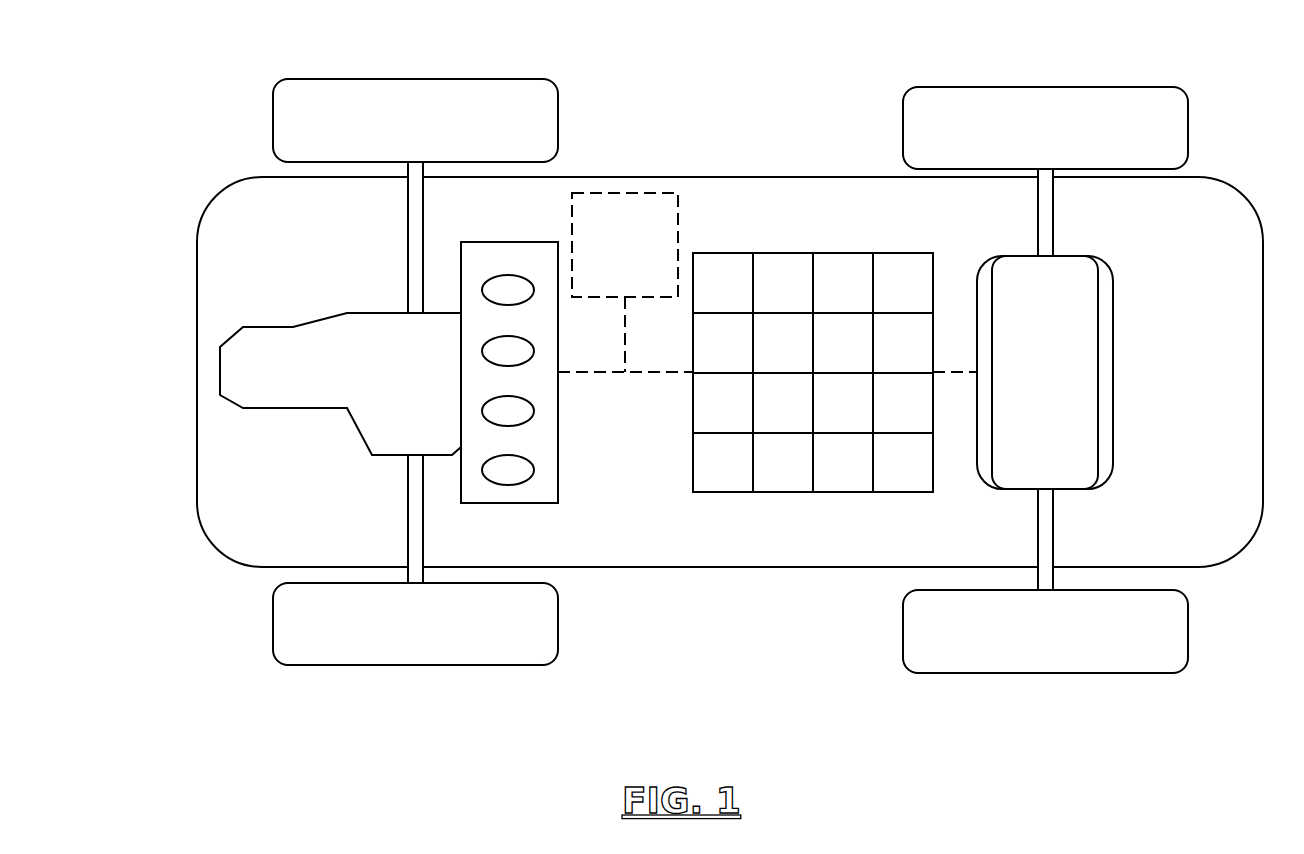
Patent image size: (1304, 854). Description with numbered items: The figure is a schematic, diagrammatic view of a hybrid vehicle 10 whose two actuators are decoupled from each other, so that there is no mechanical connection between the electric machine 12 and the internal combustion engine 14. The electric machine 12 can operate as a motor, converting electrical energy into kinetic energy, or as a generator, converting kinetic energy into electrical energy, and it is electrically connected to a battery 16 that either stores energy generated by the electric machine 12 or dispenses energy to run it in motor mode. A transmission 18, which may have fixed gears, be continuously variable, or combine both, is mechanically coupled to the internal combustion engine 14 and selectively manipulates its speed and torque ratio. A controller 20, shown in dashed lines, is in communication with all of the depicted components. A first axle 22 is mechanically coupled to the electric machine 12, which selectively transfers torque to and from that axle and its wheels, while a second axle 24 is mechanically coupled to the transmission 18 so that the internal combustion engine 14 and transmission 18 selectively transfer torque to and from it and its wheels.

The hybrid vehicle 10 is at (122, 112).
The electric machine 12 is at (1045, 372).
The internal combustion engine 14 is at (528, 434).
The battery 16 is at (774, 475).
The transmission 18 is at (310, 338).
The controller 20 is at (767, 282).
The first axle 22 is at (1043, 532).
The second axle 24 is at (412, 512).